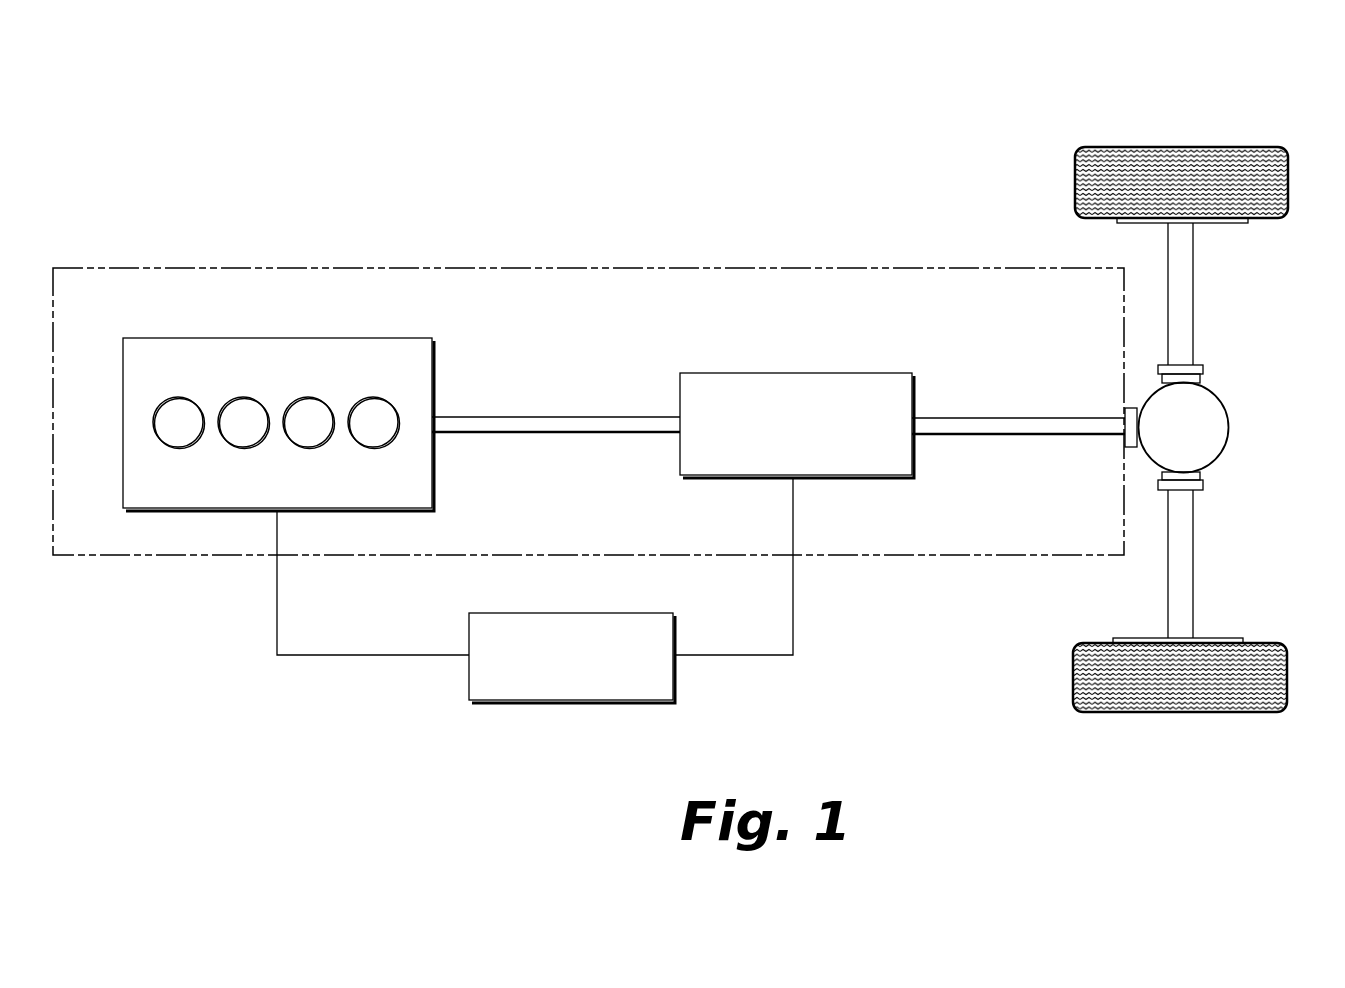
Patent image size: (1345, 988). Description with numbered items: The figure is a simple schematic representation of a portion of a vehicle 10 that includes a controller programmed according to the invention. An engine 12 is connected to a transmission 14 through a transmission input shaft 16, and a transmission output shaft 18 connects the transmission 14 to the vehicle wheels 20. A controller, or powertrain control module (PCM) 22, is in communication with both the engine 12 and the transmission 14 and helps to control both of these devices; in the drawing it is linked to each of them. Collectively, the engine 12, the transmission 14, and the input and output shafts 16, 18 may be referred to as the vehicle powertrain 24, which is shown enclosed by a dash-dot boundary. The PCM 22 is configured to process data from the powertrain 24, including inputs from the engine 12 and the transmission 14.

The vehicle 10 is at (315, 152).
The engine 12 is at (173, 337).
The transmission 14 is at (818, 372).
The transmission input shaft 16 is at (565, 416).
The transmission output shaft 18 is at (973, 417).
The vehicle wheels 20 is at (1263, 147).
The powertrain control module (PCM) 22 is at (518, 703).
The vehicle powertrain 24 is at (605, 268).